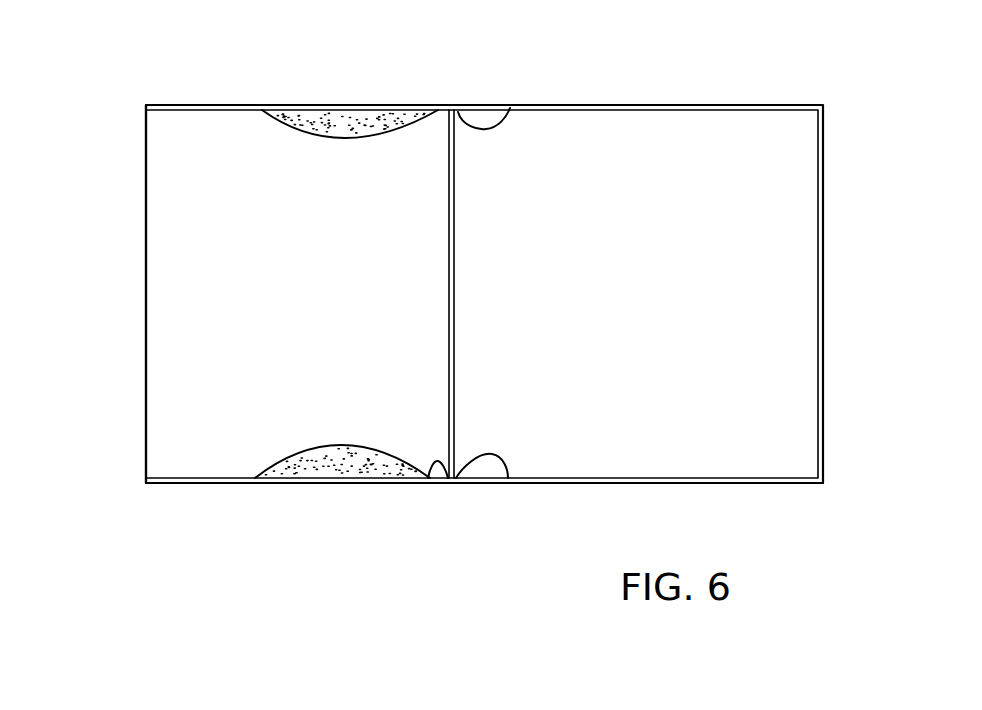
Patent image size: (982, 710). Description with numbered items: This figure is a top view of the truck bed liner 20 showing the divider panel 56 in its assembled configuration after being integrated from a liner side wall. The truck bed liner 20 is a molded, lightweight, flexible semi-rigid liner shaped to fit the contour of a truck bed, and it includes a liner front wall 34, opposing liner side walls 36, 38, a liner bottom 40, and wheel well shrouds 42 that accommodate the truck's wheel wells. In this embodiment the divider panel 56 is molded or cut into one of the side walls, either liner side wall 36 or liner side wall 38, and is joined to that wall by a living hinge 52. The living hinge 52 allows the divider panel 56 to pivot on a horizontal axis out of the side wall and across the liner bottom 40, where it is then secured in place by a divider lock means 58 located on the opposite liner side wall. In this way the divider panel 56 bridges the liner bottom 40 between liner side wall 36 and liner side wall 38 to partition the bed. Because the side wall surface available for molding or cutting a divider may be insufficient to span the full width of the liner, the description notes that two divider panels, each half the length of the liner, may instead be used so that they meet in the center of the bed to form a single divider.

The truck bed liner 20 is at (474, 286).
The liner front wall 34 is at (818, 336).
The liner side wall 36 is at (450, 107).
The liner side wall 38 is at (752, 482).
The liner bottom 40 is at (188, 240).
The wheel well shrouds 42 is at (340, 125).
The living hinge 52 is at (512, 110).
The divider panel 56 is at (462, 220).
The divider lock means 58 is at (508, 482).